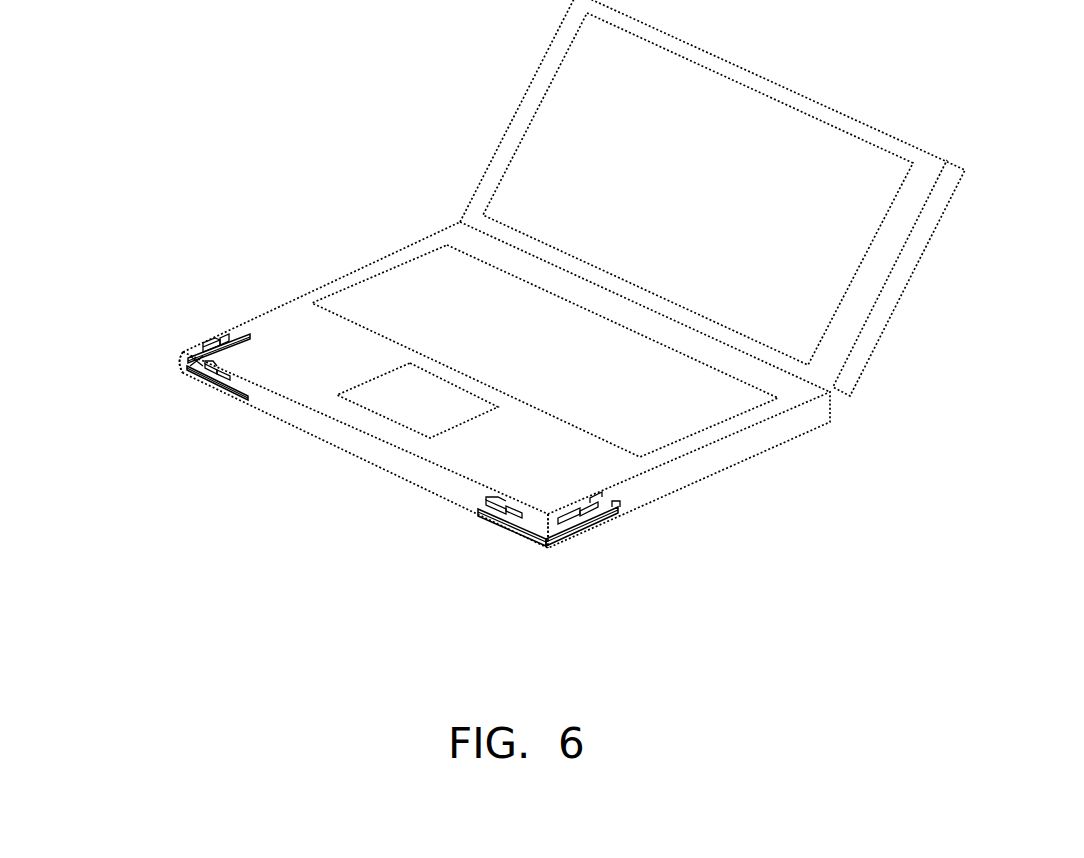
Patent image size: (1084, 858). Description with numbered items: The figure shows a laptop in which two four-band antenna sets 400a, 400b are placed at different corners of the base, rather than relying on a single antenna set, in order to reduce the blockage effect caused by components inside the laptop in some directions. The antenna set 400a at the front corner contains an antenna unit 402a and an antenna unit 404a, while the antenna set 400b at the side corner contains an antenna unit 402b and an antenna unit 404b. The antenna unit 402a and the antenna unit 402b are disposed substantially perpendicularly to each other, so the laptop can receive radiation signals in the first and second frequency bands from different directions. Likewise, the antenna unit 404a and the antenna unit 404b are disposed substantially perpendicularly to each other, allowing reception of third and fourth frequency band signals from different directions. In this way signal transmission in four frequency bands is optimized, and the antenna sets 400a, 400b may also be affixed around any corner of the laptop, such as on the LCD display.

The antenna set 400a is at (550, 560).
The antenna set 400b is at (168, 361).
The antenna unit 402a is at (476, 500).
The antenna unit 404a is at (616, 504).
The antenna unit 402b is at (224, 326).
The antenna unit 404b is at (232, 386).